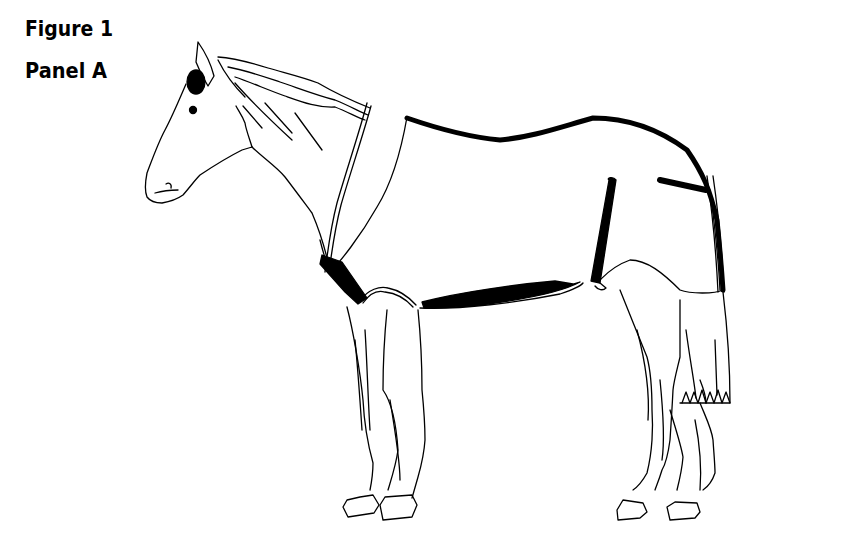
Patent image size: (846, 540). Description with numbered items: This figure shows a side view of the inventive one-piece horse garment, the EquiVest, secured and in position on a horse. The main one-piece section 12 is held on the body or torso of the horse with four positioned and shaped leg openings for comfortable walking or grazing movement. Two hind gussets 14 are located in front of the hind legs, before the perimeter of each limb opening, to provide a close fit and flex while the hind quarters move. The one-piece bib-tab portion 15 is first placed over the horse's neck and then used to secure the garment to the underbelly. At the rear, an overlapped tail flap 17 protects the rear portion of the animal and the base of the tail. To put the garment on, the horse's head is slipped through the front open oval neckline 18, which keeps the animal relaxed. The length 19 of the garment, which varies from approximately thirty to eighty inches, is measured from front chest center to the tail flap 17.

The main one-piece section 12 is at (560, 190).
The hind gusset 14 is at (598, 294).
The bib-tab portion 15 is at (518, 306).
The tail flap 17 is at (723, 237).
The front open oval neckline 18 is at (303, 252).
The length 19 is at (703, 214).